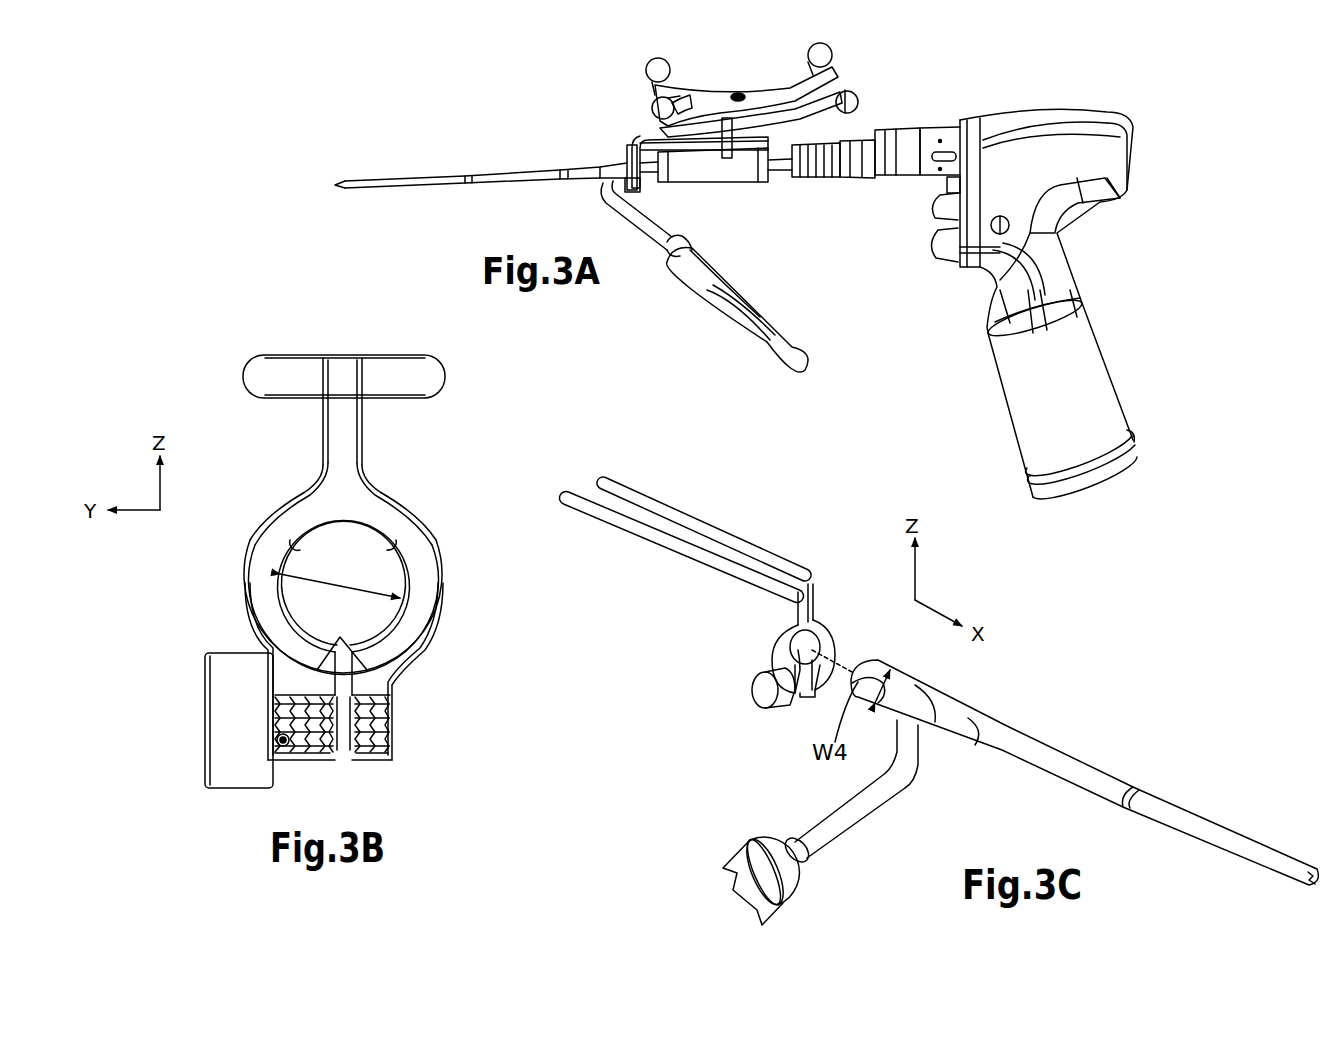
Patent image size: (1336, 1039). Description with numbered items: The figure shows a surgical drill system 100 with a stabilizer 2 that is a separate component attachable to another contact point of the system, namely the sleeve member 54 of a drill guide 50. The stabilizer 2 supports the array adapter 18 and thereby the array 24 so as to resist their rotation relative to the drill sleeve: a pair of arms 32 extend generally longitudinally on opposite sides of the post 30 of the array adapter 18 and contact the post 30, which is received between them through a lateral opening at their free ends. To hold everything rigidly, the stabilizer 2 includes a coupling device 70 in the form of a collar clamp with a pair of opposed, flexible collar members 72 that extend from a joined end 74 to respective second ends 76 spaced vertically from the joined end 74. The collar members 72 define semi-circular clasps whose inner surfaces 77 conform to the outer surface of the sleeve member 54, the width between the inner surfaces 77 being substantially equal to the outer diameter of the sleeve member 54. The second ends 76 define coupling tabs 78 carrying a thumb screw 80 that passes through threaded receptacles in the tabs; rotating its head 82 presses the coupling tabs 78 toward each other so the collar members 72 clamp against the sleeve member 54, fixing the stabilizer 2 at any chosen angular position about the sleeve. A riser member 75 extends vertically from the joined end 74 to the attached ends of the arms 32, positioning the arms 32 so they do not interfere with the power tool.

In FIG. 3A, the drill system 100 is at (487, 130).
In FIG. 3A, the stabilizer 2 is at (640, 135).
In FIG. 3B, the stabilizer 2 is at (330, 338).
In FIG. 3C, the stabilizer 2 is at (806, 543).
In FIG. 3A, the array adapter 18 is at (748, 180).
In FIG. 3A, the array 24 is at (727, 70).
In FIG. 3A, the post 30 is at (722, 130).
In FIG. 3A, the arms 32 is at (702, 143).
In FIG. 3C, the arms 32 is at (693, 524).
In FIG. 3A, the drill guide 50 is at (573, 194).
In FIG. 3C, the drill guide 50 is at (988, 698).
In FIG. 3A, the sleeve member 54 is at (582, 166).
In FIG. 3C, the sleeve member 54 is at (1055, 746).
In FIG. 3A, the coupling device 70 is at (650, 188).
In FIG. 3B, the coupling device 70 is at (430, 675).
In FIG. 3C, the coupling device 70 is at (758, 652).
In FIG. 3B, the collar members 72 is at (262, 557).
In FIG. 3C, the collar members 72 is at (803, 658).
In FIG. 3B, the joined end 74 is at (340, 498).
In FIG. 3B, the riser member 75 is at (342, 435).
In FIG. 3C, the riser member 75 is at (812, 604).
In FIG. 3B, the second ends 76 is at (342, 652).
In FIG. 3B, the inner surfaces 77 is at (300, 540).
In FIG. 3B, the coupling tabs 78 is at (305, 760).
In FIG. 3B, the thumb screw 80 is at (342, 750).
In FIG. 3B, the head 82 is at (228, 734).
In FIG. 3C, the head 82 is at (773, 688).